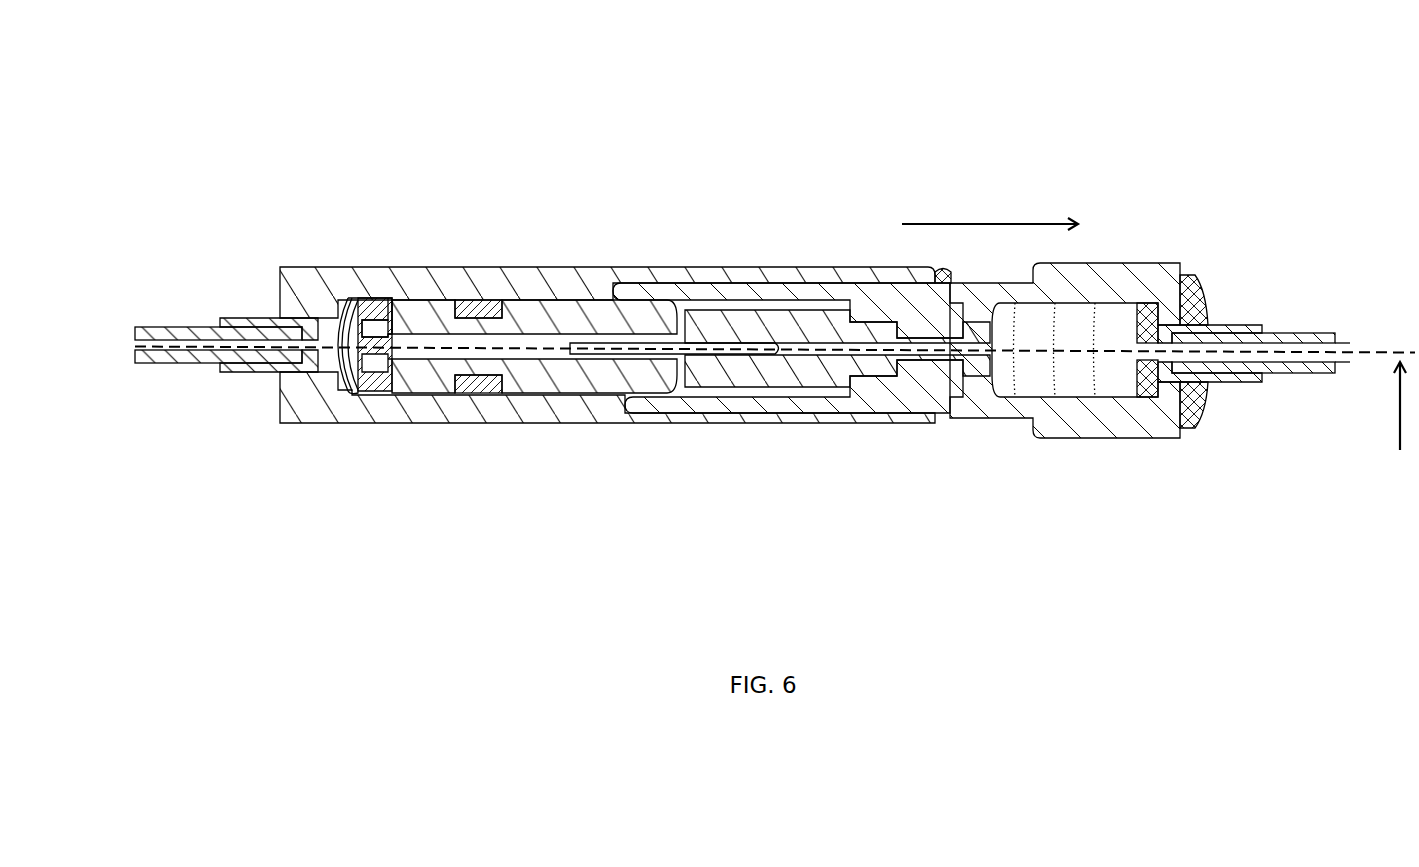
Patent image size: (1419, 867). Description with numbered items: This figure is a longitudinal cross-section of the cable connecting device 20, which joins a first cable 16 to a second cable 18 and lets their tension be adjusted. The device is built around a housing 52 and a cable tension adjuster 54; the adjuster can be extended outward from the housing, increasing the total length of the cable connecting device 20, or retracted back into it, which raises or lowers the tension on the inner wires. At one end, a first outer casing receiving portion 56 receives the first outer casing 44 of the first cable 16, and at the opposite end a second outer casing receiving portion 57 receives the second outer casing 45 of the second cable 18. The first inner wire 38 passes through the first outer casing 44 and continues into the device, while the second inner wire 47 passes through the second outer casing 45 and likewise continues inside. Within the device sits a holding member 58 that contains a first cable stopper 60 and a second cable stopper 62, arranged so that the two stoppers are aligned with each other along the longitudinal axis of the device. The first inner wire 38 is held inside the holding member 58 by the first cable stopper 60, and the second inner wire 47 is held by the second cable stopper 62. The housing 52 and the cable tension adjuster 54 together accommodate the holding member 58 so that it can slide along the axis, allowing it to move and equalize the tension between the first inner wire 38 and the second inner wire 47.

The first cable 16 is at (160, 375).
The second cable 18 is at (1303, 383).
The cable connecting device 20 is at (1070, 103).
The first inner wire 38 is at (175, 340).
The first outer casing 44 is at (213, 325).
The second outer casing 45 is at (1268, 330).
The second inner wire 47 is at (1303, 345).
The housing 52 is at (433, 432).
The cable tension adjuster 54 is at (1090, 445).
The first outer casing receiving portion 56 is at (290, 393).
The second outer casing receiving portion 57 is at (1198, 440).
The holding member 58 is at (918, 388).
The first cable stopper 60 is at (565, 325).
The second cable stopper 62 is at (745, 325).